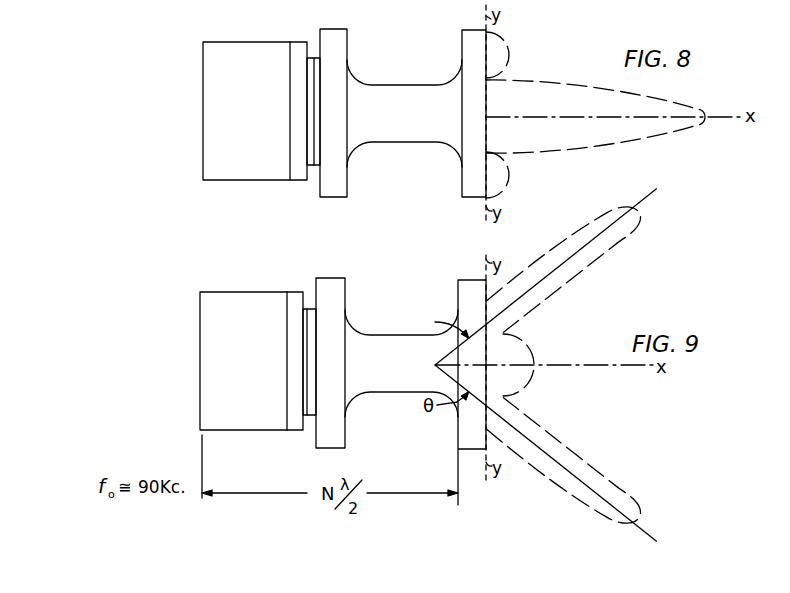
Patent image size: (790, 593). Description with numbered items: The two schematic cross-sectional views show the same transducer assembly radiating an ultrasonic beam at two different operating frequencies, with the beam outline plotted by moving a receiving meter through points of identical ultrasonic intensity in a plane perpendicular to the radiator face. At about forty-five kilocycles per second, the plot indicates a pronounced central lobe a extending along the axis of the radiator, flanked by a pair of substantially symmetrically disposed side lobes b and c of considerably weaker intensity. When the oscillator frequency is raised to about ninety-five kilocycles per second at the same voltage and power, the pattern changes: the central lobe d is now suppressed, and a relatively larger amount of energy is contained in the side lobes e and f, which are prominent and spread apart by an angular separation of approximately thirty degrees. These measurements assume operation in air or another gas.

In FIG. 8, the central lobe a is at (693, 105).
In FIG. 8, the side lobe b is at (508, 53).
In FIG. 8, the side lobe c is at (508, 178).
In FIG. 9, the central lobe d is at (530, 348).
In FIG. 9, the side lobe e is at (633, 227).
In FIG. 9, the side lobe f is at (625, 495).